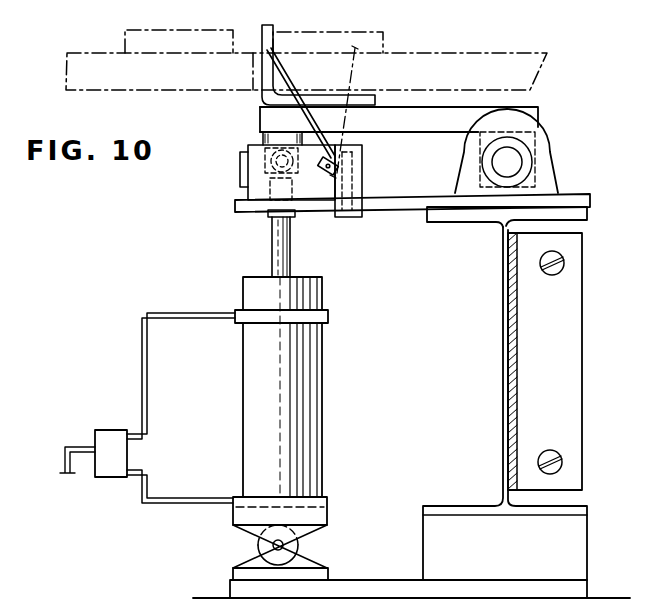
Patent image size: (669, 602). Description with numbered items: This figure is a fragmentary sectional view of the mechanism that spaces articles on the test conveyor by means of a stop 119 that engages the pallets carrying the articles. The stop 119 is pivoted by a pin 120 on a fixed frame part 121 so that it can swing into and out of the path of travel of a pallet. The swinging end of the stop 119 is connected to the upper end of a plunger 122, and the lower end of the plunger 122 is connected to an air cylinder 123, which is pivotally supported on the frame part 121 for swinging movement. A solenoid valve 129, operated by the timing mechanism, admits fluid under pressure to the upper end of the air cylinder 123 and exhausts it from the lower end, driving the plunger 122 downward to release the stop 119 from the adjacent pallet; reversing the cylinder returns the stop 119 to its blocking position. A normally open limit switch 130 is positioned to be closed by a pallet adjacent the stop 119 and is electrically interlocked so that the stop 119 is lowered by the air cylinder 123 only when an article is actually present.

The stop 119 is at (273, 30).
The pin 120 is at (517, 158).
The fixed frame part 121 is at (527, 283).
The plunger 122 is at (278, 247).
The air cylinder 123 is at (242, 403).
The solenoid valve 129 is at (118, 460).
The limit switch 130 is at (362, 182).